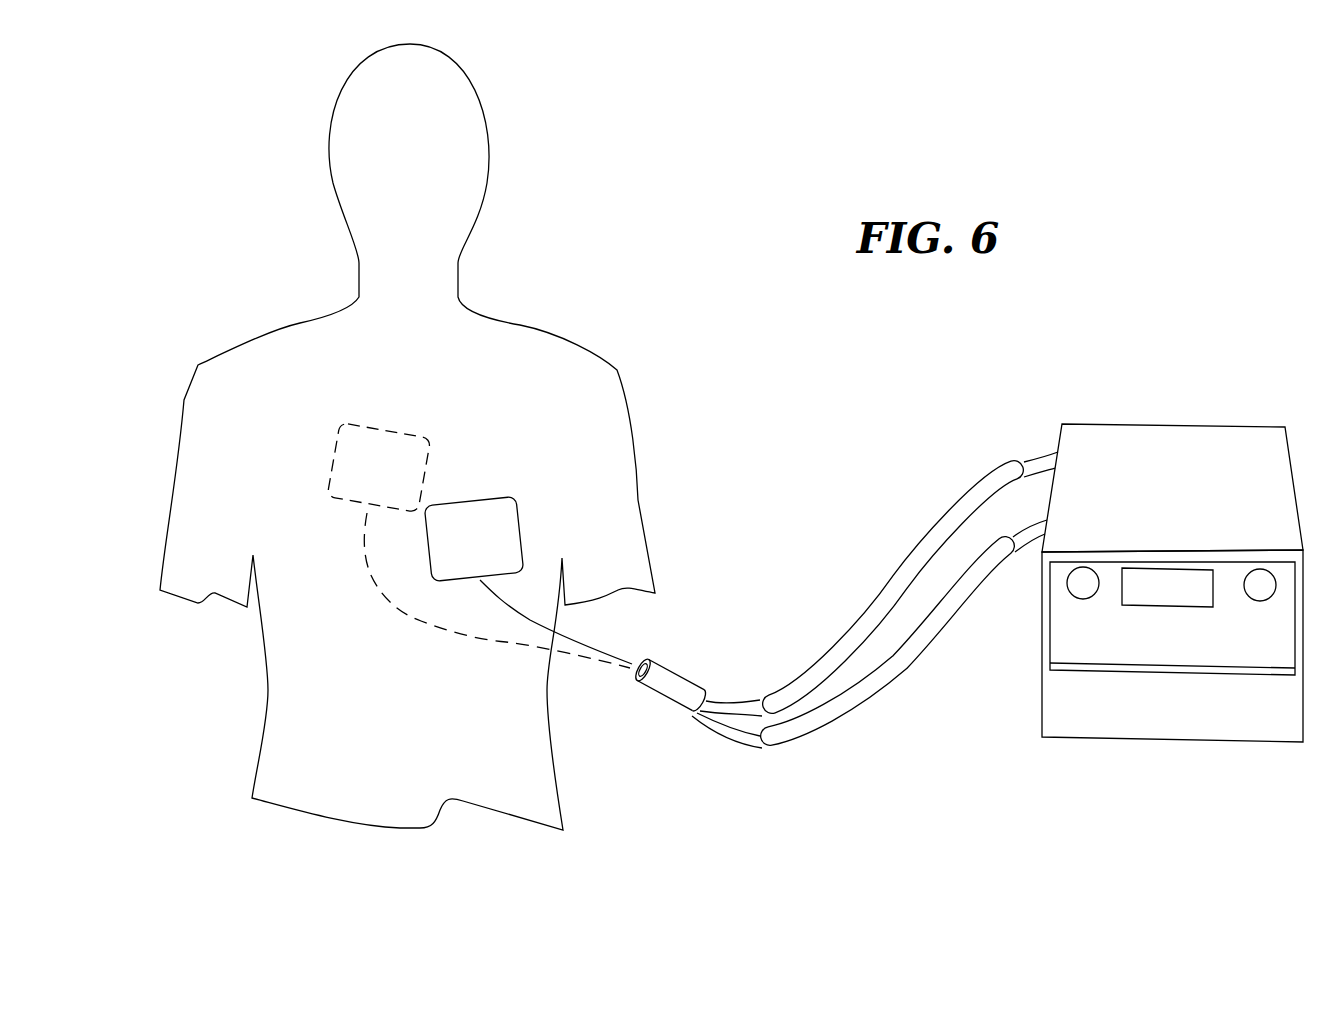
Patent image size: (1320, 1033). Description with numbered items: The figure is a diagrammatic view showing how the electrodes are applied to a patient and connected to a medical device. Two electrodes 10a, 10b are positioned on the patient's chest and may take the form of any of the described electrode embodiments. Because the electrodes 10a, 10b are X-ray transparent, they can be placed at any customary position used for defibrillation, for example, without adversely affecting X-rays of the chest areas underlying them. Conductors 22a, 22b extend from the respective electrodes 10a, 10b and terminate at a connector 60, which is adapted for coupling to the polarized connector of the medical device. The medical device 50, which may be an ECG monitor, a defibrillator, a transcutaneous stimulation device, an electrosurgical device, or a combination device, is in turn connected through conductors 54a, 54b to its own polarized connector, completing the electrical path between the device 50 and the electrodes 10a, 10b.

The electrode 10a is at (357, 484).
The electrode 10b is at (455, 555).
The conductor 22a is at (593, 662).
The conductor 22b is at (582, 637).
The connector 60 is at (672, 672).
The conductor 54a is at (840, 640).
The conductor 54b is at (850, 713).
The medical device 50 is at (1153, 500).